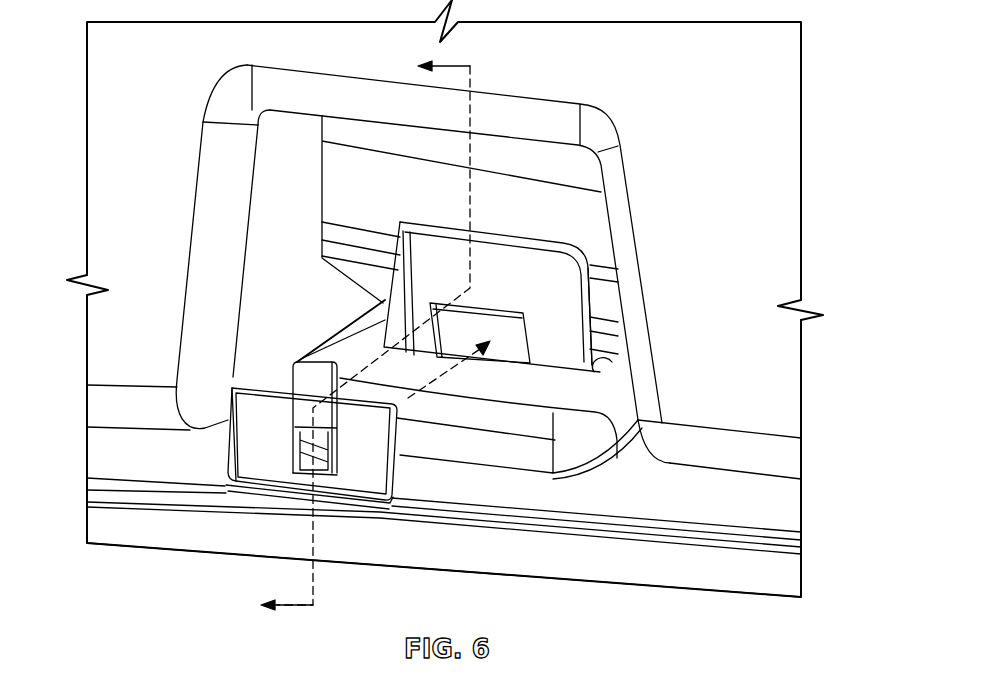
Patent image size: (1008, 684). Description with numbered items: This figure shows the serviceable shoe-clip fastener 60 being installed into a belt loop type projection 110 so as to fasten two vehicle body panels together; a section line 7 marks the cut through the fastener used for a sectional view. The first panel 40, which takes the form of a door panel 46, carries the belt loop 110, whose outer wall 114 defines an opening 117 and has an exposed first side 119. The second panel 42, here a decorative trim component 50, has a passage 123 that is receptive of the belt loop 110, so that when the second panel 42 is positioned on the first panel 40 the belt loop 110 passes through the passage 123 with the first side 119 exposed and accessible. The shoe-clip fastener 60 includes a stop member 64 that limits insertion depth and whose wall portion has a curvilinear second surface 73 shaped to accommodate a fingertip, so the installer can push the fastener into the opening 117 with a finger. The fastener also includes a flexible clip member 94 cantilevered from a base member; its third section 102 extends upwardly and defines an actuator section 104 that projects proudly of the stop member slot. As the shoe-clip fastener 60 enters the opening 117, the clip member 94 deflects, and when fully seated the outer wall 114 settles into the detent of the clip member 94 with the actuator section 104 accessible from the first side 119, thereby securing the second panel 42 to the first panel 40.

The section line 7 is at (355, 337).
The first panel 40 is at (718, 575).
The second panel 42 is at (782, 247).
The door panel 46 is at (795, 550).
The decorative trim component 50 is at (788, 390).
The serviceable shoe-clip fastener 60 is at (410, 429).
The stop member 64 is at (400, 490).
The second surface 73 is at (240, 465).
The flexible clip member 94 is at (290, 360).
The third section 102 is at (288, 403).
The actuator section 104 is at (300, 362).
The belt loop type projection 110 is at (380, 210).
The outer wall 114 is at (596, 307).
The opening 117 is at (497, 316).
The first side 119 is at (418, 288).
The passage 123 is at (610, 358).